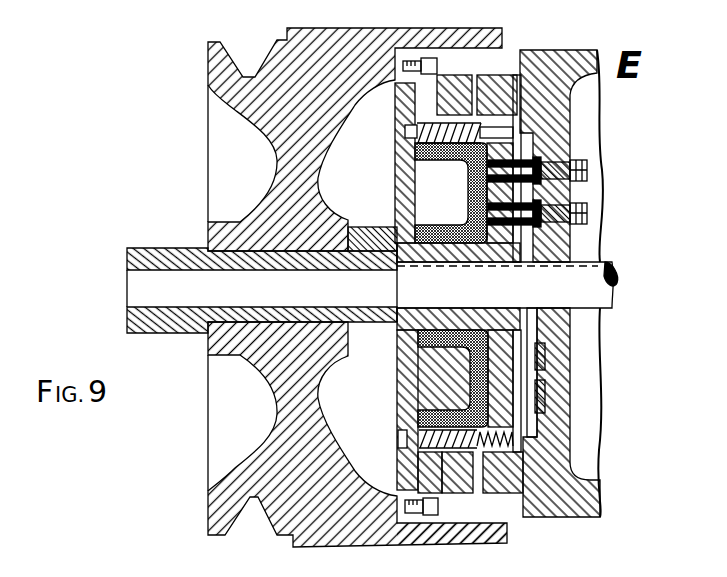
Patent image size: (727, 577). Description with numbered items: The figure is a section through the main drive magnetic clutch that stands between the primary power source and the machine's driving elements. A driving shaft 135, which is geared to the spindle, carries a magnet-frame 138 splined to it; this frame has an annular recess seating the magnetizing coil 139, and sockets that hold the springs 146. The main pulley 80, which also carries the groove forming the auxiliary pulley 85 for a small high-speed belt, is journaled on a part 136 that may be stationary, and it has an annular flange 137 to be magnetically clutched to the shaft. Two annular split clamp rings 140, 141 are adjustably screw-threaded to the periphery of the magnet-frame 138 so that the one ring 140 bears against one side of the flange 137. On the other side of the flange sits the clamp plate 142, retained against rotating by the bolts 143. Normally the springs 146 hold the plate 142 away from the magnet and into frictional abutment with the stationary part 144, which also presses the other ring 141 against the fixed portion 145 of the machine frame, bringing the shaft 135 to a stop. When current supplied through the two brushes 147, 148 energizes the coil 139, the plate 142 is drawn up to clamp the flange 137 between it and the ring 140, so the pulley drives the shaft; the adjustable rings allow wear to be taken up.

The main pulley 80 is at (423, 545).
The auxiliary pulley 85 is at (267, 518).
The driving shaft 135 is at (602, 268).
The stationary part 136 is at (165, 247).
The annular flange 137 is at (437, 77).
The magnet-frame 138 is at (492, 148).
The magnetizing coil 139 is at (418, 420).
The annular split clamp ring 140 is at (473, 80).
The annular split clamp ring 141 is at (510, 77).
The clamp plate 142 is at (396, 152).
The bolts 143 is at (400, 446).
The stationary part 144 is at (386, 228).
The fixed portion of the frame 145 is at (540, 55).
The springs 146 is at (398, 438).
The brush 147 is at (528, 175).
The brush 148 is at (528, 215).